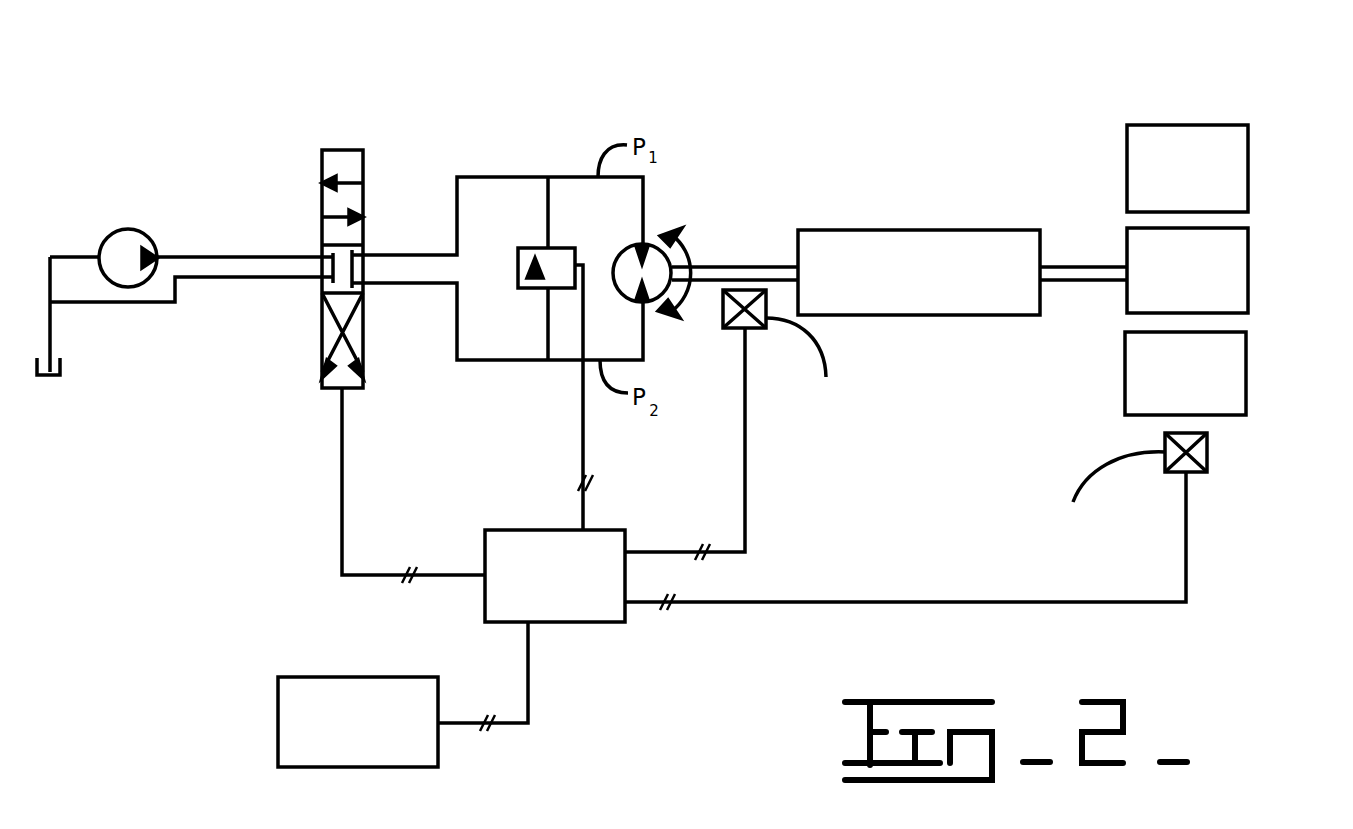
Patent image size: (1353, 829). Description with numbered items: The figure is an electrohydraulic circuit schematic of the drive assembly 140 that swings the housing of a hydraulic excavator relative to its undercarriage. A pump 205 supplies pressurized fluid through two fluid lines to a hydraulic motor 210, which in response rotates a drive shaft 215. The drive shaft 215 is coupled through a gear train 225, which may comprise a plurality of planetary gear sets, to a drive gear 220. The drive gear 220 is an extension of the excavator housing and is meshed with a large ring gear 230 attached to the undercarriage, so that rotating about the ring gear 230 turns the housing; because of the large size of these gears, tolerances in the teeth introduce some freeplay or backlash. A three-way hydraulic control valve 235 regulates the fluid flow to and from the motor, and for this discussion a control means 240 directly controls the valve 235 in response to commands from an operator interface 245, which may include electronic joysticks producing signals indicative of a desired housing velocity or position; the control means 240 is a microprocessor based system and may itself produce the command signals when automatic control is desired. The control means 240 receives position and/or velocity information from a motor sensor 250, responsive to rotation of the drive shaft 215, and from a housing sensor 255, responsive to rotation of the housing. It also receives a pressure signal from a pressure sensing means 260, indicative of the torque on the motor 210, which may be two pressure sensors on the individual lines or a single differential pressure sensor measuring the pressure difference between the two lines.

The drive assembly 140 is at (952, 88).
The pump 205 is at (155, 250).
The three-way hydraulic control valve 235 is at (366, 164).
The pressure sensing means 260 is at (553, 248).
The hydraulic motor 210 is at (654, 246).
The drive shaft 215 is at (715, 262).
The motor sensor 250 is at (733, 330).
The gear train 225 is at (1003, 246).
The drive gear 220 is at (1248, 258).
The ring gear 230 is at (1248, 150).
The housing sensor 255 is at (1207, 448).
The control means 240 is at (621, 548).
The operator interface 245 is at (418, 697).